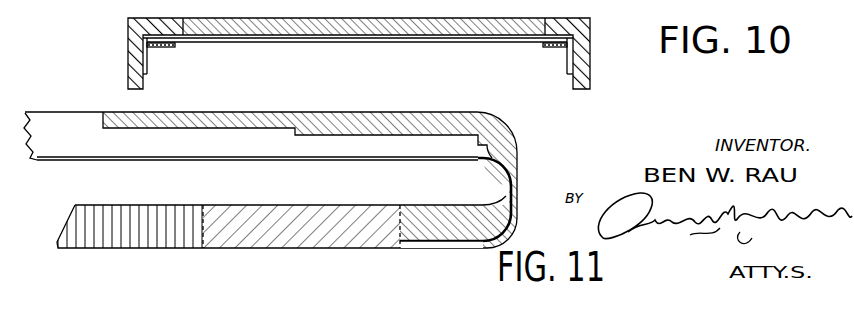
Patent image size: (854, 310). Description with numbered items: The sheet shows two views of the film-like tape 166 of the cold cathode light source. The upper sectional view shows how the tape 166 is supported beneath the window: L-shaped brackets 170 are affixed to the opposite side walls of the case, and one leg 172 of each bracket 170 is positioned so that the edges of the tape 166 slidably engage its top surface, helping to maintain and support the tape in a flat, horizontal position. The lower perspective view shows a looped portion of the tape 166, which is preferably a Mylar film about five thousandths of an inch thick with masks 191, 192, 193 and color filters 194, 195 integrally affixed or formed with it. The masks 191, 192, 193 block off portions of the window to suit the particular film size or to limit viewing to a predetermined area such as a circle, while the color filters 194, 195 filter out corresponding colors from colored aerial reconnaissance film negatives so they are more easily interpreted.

In FIG. 10, the film-like tape 166 is at (300, 43).
In FIG. 11, the film-like tape 166 is at (80, 112).
In FIG. 10, the L-shaped bracket 170 is at (151, 61).
In FIG. 10, the leg 172 is at (171, 50).
In FIG. 11, the mask 191 is at (236, 122).
In FIG. 10, the mask 192 is at (368, 40).
In FIG. 11, the mask 192 is at (378, 135).
In FIG. 11, the mask 193 is at (500, 150).
In FIG. 11, the color filter 194 is at (331, 206).
In FIG. 11, the color filter 195 is at (145, 222).